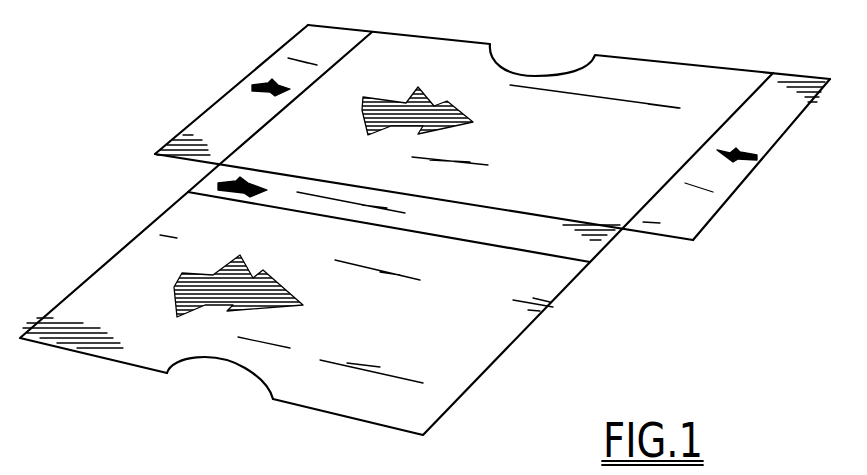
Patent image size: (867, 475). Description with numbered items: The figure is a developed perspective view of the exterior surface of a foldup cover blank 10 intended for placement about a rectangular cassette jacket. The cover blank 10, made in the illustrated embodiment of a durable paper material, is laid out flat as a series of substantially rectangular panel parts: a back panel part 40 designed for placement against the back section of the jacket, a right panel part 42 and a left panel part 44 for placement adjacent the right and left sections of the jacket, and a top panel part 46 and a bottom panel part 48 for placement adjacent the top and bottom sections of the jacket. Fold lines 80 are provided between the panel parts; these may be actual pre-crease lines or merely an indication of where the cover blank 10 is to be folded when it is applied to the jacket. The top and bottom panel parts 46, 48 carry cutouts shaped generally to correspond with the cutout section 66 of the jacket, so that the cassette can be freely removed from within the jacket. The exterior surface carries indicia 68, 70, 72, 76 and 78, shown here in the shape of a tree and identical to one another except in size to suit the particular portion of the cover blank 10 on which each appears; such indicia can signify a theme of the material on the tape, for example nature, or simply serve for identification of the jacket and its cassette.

The foldup cover blank 10 is at (431, 224).
The back panel part 40 is at (210, 184).
The right panel part 42 is at (768, 137).
The left panel part 44 is at (275, 62).
The top panel part 46 is at (462, 370).
The bottom panel part 48 is at (692, 75).
The cutout section 66 is at (522, 70).
The indicia 68 is at (243, 262).
The indicia 70 is at (237, 182).
The indicia 72 is at (404, 126).
The indicia 76 is at (745, 160).
The indicia 78 is at (247, 91).
The fold lines 80 is at (313, 85).